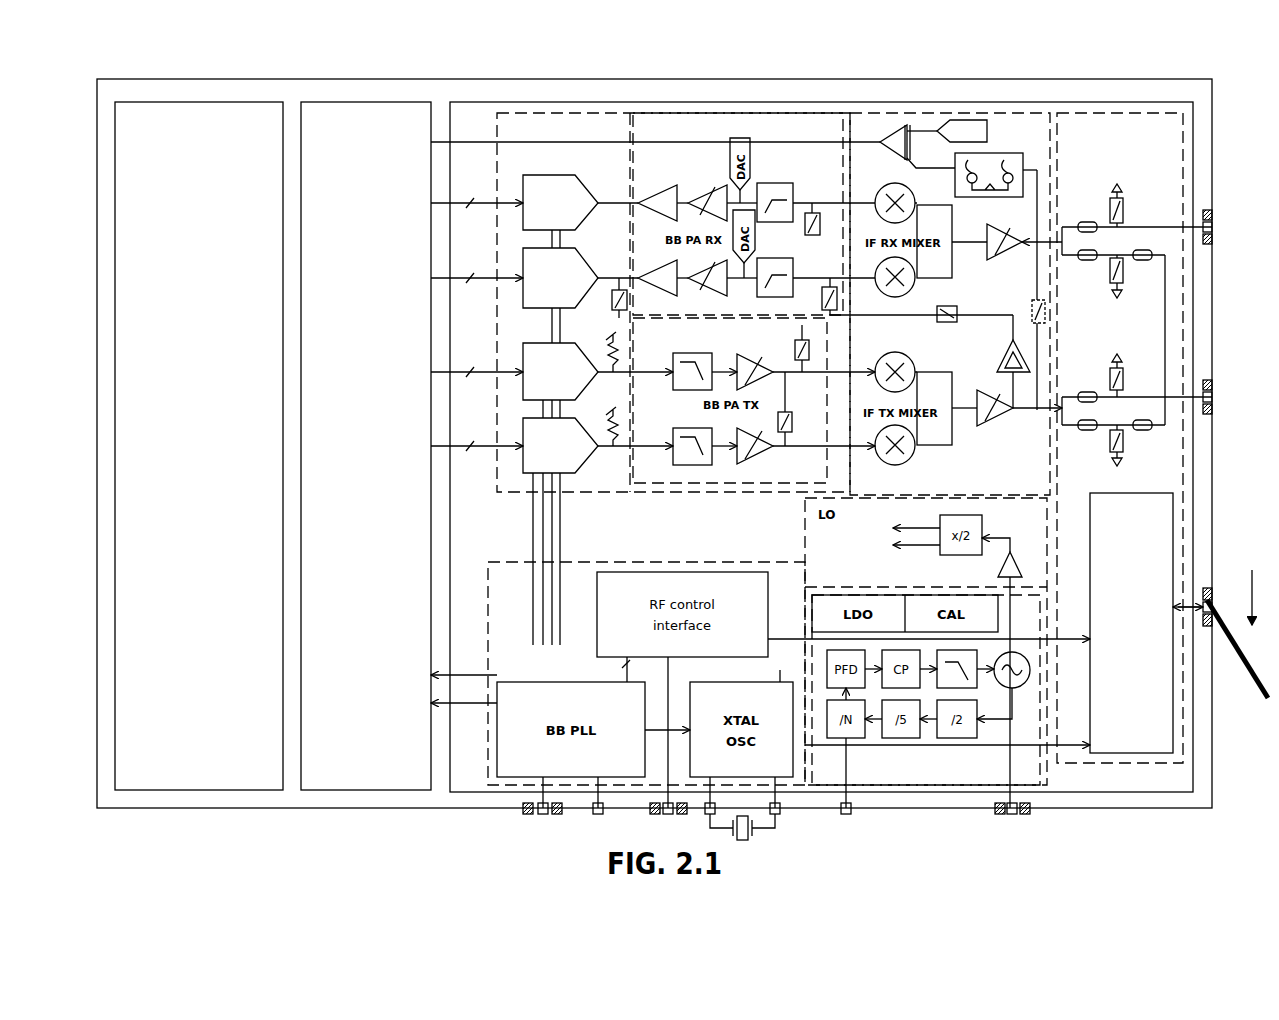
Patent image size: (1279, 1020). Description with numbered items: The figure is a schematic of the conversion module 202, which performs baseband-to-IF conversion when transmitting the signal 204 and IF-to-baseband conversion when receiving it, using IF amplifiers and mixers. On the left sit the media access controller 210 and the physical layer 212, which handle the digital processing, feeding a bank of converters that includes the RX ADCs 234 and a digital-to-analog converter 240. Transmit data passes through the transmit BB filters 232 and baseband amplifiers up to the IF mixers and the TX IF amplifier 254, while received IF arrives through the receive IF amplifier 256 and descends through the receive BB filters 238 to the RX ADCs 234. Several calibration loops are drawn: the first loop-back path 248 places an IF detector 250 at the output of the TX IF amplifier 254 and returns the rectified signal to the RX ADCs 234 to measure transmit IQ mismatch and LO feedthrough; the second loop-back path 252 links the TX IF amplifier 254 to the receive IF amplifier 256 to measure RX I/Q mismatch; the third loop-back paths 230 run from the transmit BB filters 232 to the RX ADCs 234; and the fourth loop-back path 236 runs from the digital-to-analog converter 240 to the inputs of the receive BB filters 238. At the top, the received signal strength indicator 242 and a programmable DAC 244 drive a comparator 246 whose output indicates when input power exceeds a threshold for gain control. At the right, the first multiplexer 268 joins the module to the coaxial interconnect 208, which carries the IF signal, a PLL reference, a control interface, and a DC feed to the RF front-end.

The conversion module 202 is at (97, 79).
The signal 204 is at (1251, 586).
The coaxial interconnect 208 is at (1246, 670).
The media access controller 210 is at (199, 446).
The physical layer 212 is at (366, 446).
The third loop-back paths 230 is at (784, 378).
The transmit BB filters 232 is at (673, 385).
The RX ADCs 234 is at (523, 293).
The fourth loop-back path 236 is at (770, 482).
The receive BB filters 238 is at (793, 186).
The digital-to-analog converter 240 is at (523, 458).
The received signal strength indicator 242 is at (1026, 140).
The programmable DAC 244 is at (970, 118).
The comparator 246 is at (895, 135).
The first loop-back path 248 is at (1000, 313).
The IF detector 250 is at (997, 364).
The second loop-back path 252 is at (1045, 330).
The TX IF amplifier 254 is at (1003, 420).
The receive IF amplifier 256 is at (990, 235).
The first multiplexer 268 is at (1131, 623).